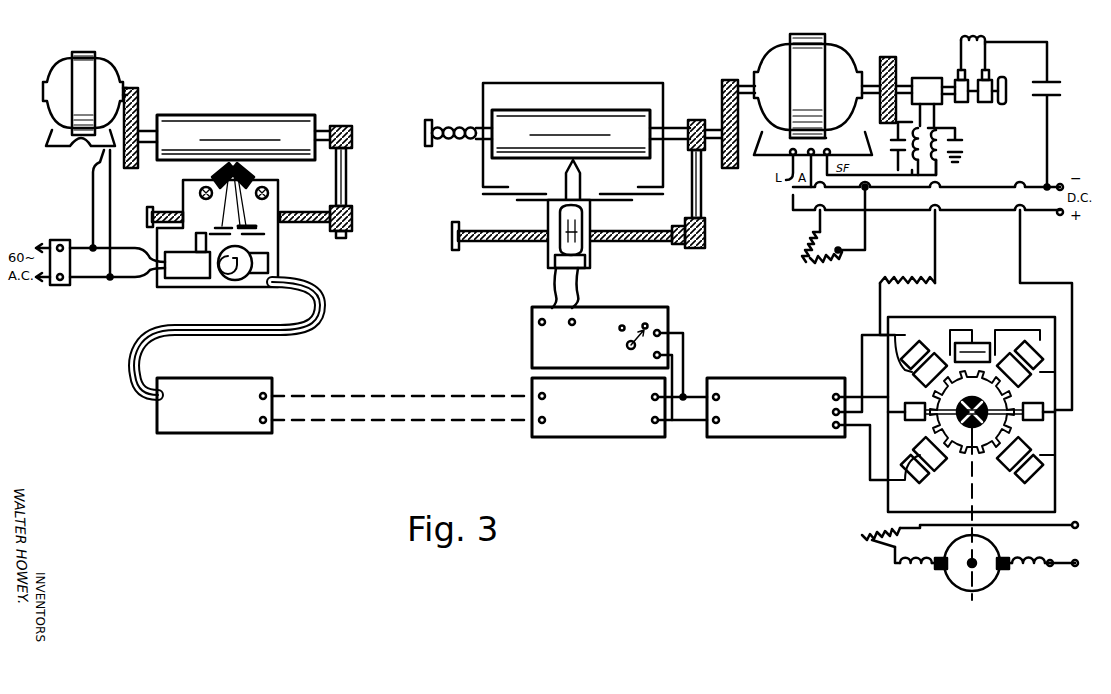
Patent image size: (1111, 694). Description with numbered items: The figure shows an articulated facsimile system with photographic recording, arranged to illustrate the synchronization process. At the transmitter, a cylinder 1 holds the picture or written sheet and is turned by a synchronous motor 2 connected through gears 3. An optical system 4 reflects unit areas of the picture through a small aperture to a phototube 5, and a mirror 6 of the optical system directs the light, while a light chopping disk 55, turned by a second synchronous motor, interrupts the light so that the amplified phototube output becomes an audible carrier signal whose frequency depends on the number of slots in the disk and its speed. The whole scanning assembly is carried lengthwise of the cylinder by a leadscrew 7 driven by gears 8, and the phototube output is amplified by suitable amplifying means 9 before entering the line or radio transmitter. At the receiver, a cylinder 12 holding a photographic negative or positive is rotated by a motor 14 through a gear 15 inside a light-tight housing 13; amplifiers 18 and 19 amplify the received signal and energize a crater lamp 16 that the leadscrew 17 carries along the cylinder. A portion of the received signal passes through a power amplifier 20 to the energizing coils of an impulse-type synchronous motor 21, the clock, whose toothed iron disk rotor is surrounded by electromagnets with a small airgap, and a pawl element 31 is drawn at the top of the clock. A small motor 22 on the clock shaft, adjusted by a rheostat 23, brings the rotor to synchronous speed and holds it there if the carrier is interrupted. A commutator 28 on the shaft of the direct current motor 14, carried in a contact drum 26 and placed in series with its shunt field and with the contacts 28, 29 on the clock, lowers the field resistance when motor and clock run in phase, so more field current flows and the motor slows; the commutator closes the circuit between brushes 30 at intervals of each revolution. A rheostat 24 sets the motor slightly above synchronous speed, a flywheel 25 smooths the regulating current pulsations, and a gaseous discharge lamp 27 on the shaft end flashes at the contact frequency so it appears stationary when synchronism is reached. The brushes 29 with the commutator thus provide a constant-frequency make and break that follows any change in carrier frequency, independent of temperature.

The cylinder 1 is at (252, 118).
The synchronous motor 2 is at (98, 58).
The gears 3 is at (138, 100).
The optical system 4 is at (260, 164).
The phototube 5 is at (250, 252).
The mirror 6 is at (248, 226).
The leadscrew 7 is at (180, 206).
The gears 8 is at (348, 182).
The amplifying means 9 is at (268, 394).
The cylinder 12 is at (500, 157).
The light-tight housing 13 is at (590, 95).
The motor 14 is at (832, 56).
The gear 15 is at (722, 102).
The crater lamp 16 is at (590, 218).
The leadscrew 17 is at (512, 244).
The amplifier 18 is at (660, 308).
The amplifier 19 is at (630, 438).
The power amplifier 20 is at (788, 380).
The synchronous motor 21 is at (908, 424).
The small motor 22 is at (958, 578).
The rheostat 23 is at (862, 537).
The rheostat 24 is at (808, 268).
The flywheel 25 is at (894, 60).
The contact drum 26 is at (930, 78).
The gaseous discharge lamp 27 is at (1003, 106).
The commutator 28 is at (905, 406).
The brushes 29 is at (1008, 396).
The brushes 30 is at (940, 118).
The pawl 31 is at (972, 343).
The light chopping disk 55 is at (206, 230).